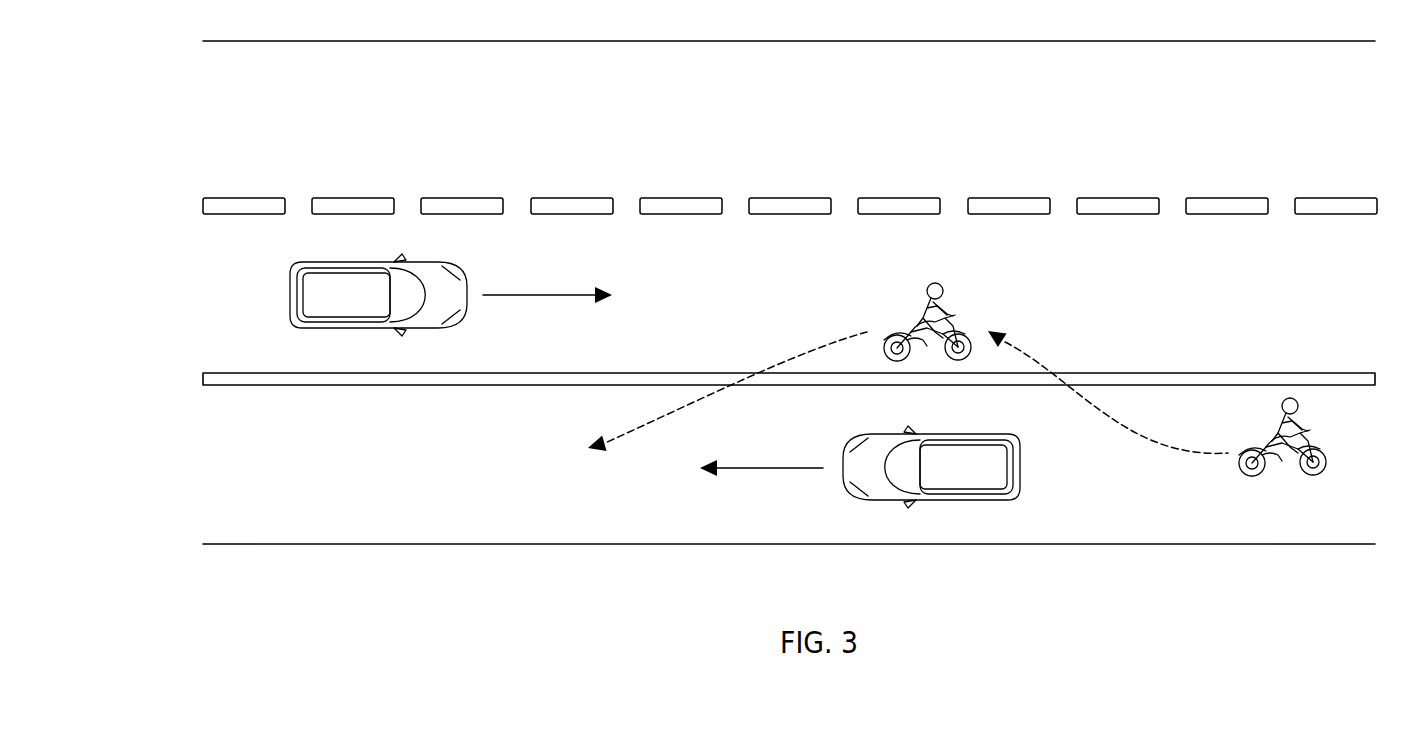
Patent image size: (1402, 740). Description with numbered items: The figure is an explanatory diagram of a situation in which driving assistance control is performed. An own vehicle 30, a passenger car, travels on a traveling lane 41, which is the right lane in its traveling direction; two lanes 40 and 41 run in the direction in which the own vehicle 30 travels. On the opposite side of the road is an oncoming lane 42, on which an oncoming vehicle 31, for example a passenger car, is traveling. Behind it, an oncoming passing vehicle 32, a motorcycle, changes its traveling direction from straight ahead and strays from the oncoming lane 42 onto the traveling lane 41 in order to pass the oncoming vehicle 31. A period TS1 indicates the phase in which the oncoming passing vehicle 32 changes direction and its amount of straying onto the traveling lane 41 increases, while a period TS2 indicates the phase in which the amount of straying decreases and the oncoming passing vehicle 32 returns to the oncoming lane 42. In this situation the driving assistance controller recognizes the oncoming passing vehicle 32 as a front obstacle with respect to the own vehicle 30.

The own vehicle 30 is at (349, 303).
The oncoming vehicle 31 is at (963, 482).
The oncoming passing vehicle 32 is at (1285, 477).
The lane 40 is at (248, 113).
The traveling lane 41 is at (235, 280).
The oncoming lane 42 is at (237, 456).
The period TS1 is at (1040, 353).
The period TS2 is at (826, 343).